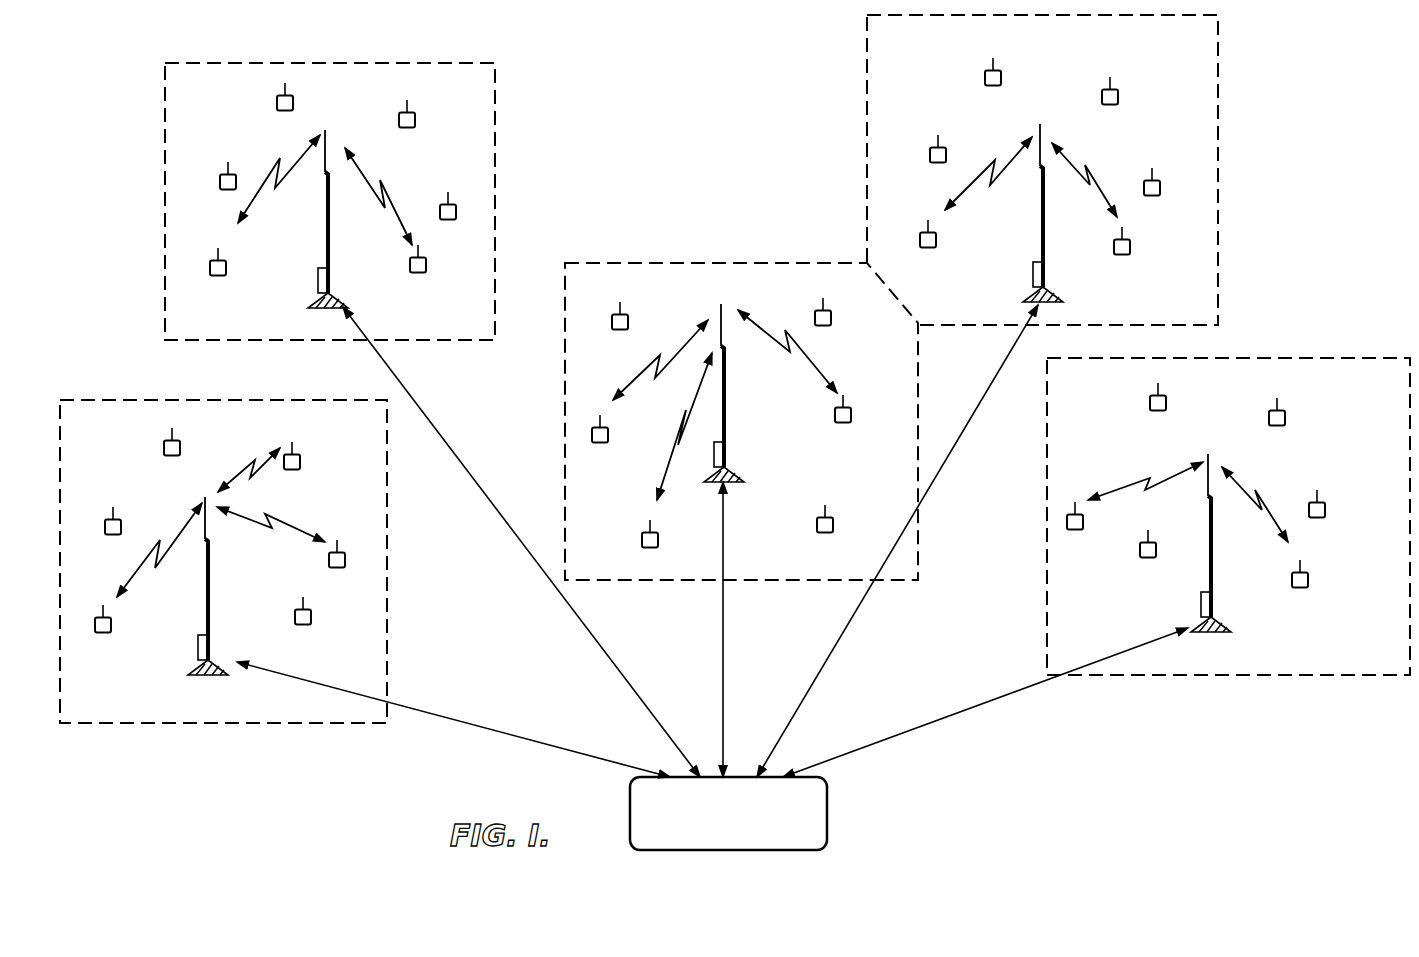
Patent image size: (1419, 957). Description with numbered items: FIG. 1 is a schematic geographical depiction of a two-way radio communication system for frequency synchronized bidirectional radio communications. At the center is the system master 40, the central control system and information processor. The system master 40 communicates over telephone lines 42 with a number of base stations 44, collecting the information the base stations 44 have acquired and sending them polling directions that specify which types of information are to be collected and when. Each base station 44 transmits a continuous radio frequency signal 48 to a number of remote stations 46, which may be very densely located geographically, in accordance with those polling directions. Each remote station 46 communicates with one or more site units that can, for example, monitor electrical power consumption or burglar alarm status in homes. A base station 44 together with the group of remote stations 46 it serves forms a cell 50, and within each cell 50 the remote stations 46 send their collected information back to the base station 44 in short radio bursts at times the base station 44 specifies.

The system master 40 is at (828, 797).
The telephone lines 42 is at (632, 685).
The base station 44 is at (325, 238).
The remote station 46 is at (294, 101).
The continuous radio frequency signal 48 is at (293, 158).
The cell 50 is at (462, 63).